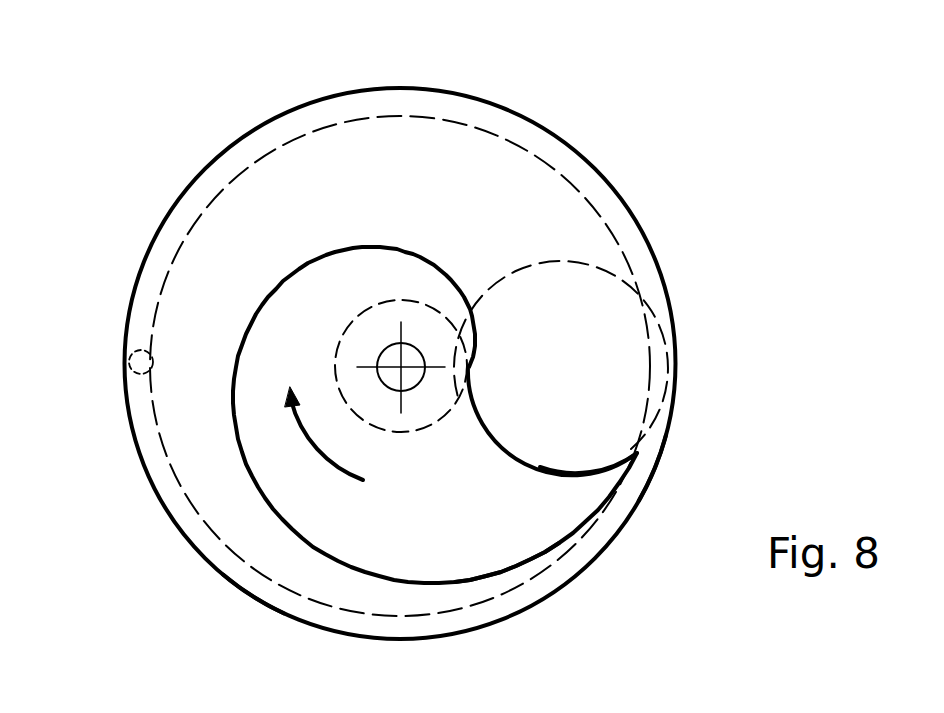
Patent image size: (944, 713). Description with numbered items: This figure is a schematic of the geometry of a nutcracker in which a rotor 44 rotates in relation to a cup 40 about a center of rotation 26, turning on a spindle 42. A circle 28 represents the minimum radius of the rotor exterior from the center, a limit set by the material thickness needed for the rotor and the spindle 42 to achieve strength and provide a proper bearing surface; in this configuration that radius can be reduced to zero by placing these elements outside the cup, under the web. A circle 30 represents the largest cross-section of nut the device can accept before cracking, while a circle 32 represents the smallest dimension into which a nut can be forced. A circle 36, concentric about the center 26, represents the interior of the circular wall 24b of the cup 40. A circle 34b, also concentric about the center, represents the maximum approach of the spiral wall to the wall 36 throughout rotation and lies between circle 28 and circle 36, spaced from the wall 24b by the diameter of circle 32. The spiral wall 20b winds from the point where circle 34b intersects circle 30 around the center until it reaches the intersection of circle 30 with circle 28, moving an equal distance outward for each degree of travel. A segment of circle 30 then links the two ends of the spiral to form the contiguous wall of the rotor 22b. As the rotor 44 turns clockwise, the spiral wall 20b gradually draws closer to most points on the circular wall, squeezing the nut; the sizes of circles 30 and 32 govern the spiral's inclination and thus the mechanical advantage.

The spiral wall 20b is at (380, 250).
The wall of the rotor 22b is at (578, 477).
The circular wall of the cup 24b is at (383, 86).
The center of rotation 26 is at (401, 367).
The circle representing minimum radius of rotor exterior 28 is at (330, 357).
The circle representing maximum nut cross-section 30 is at (587, 262).
The circle representing minimum nut dimension 32 is at (147, 378).
The circle representing maximum approach of the spiral wall 34b is at (167, 450).
The circle representing interior of the cup wall 36 is at (217, 577).
The cup 40 is at (657, 470).
The spindle 42 is at (392, 393).
The rotor 44 is at (495, 523).